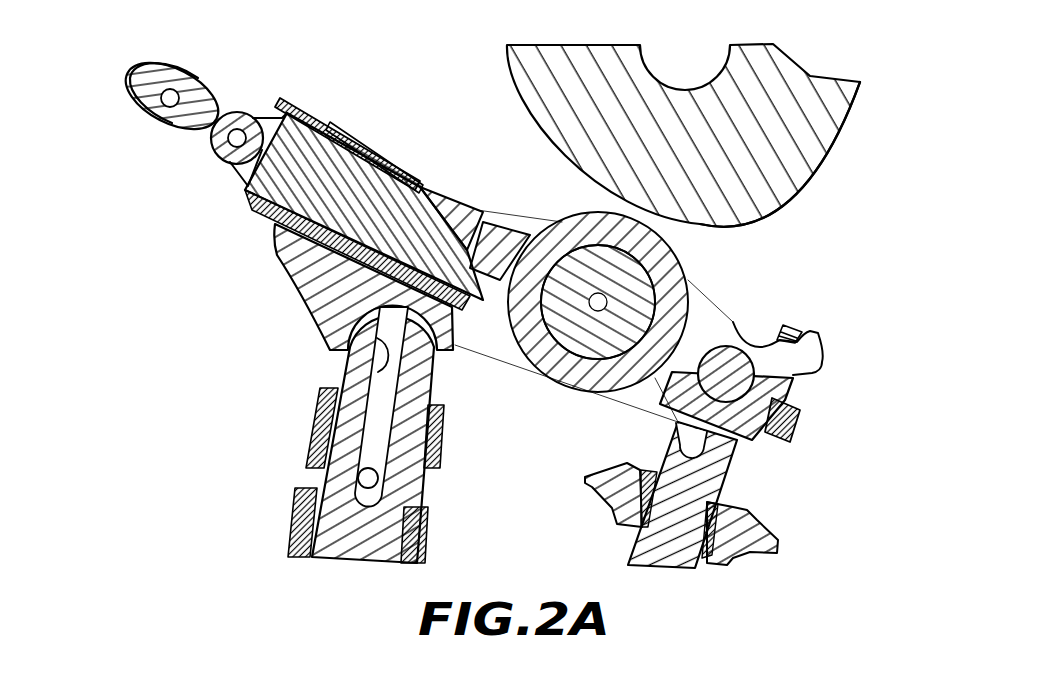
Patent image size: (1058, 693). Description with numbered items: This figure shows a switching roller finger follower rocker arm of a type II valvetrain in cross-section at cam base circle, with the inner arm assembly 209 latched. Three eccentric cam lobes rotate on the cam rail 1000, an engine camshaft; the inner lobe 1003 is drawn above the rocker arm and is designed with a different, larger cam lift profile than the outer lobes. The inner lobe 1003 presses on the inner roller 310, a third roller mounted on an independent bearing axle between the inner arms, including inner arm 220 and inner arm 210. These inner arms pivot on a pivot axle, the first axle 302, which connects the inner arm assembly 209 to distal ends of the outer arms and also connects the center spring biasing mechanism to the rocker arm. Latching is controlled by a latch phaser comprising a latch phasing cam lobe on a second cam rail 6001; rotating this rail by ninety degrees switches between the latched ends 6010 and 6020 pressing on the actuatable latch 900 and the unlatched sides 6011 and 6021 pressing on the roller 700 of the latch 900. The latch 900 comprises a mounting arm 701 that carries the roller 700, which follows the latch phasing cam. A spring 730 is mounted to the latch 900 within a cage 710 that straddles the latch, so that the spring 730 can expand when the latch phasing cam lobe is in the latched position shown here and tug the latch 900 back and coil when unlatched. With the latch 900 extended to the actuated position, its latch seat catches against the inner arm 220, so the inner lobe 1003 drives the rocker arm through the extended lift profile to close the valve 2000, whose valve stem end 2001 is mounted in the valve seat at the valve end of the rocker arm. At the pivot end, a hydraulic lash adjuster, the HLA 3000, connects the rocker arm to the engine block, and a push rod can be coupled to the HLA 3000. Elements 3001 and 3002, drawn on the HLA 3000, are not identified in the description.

The cam rail 1000 is at (711, 119).
The inner lobe 1003 is at (835, 145).
The inner roller 310 is at (688, 262).
The first axle 302 is at (731, 362).
The inner arm assembly 209 is at (710, 283).
The inner arm 210 is at (825, 343).
The inner arm 220 is at (515, 220).
The actuatable latch 900 is at (400, 170).
The roller 700 is at (254, 118).
The mounting arm 701 is at (233, 183).
The cage 710 is at (316, 108).
The spring 730 is at (340, 130).
The latched end 6010 is at (160, 82).
The unlatched side 6011 is at (153, 62).
The second cam rail 6001 is at (190, 86).
The unlatched side 6021 is at (137, 107).
The latched end 6020 is at (213, 140).
The HLA 3000 is at (383, 455).
The guide pin 3001 is at (368, 490).
The detent 3002 is at (380, 365).
The valve 2000 is at (704, 495).
The valve stem end 2001 is at (683, 448).